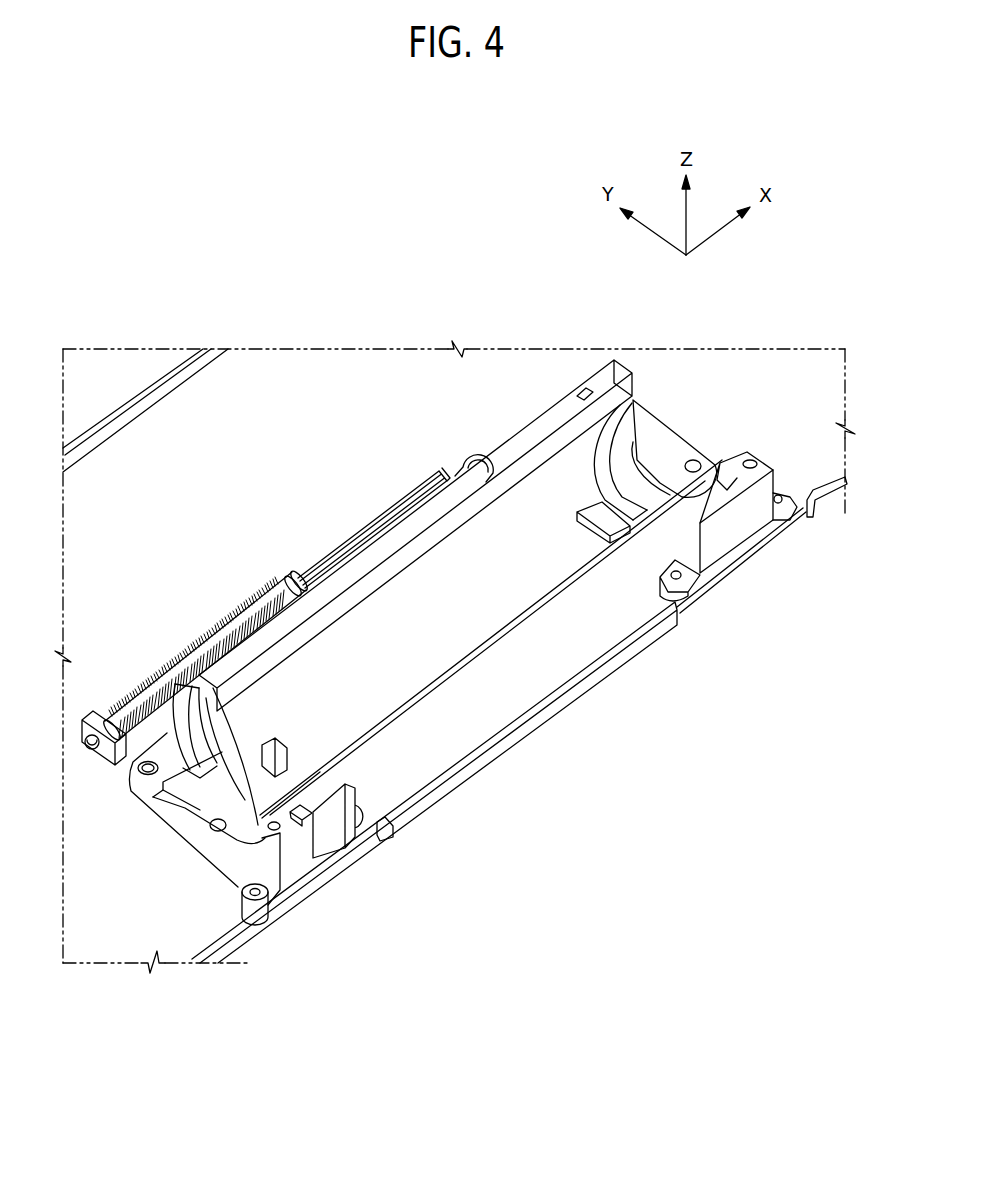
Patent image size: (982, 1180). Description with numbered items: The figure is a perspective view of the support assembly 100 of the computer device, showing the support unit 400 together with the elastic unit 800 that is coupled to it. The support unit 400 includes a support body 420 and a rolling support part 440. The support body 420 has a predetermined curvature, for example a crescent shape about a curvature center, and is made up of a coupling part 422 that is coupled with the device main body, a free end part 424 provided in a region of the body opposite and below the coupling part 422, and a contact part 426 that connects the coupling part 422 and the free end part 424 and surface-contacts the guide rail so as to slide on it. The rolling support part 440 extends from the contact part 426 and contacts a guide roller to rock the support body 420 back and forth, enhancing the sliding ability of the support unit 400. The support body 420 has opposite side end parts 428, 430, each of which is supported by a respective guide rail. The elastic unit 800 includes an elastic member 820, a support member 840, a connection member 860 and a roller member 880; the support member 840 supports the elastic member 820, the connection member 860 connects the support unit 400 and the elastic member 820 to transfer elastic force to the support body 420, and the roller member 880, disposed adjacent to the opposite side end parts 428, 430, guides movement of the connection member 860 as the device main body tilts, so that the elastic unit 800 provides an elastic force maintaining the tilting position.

The support assembly 100 is at (345, 308).
The support unit 400 is at (684, 757).
The support body 420 is at (609, 757).
The coupling part 422 is at (413, 553).
The free end part 424 is at (398, 714).
The contact part 426 is at (228, 737).
The opposite side end part 428 is at (393, 827).
The opposite side end part 430 is at (615, 495).
The rolling support part 440 is at (243, 737).
The elastic unit 800 is at (391, 386).
The elastic member 820 is at (200, 640).
The support member 840 is at (83, 718).
The connection member 860 is at (337, 548).
The roller member 880 is at (463, 457).